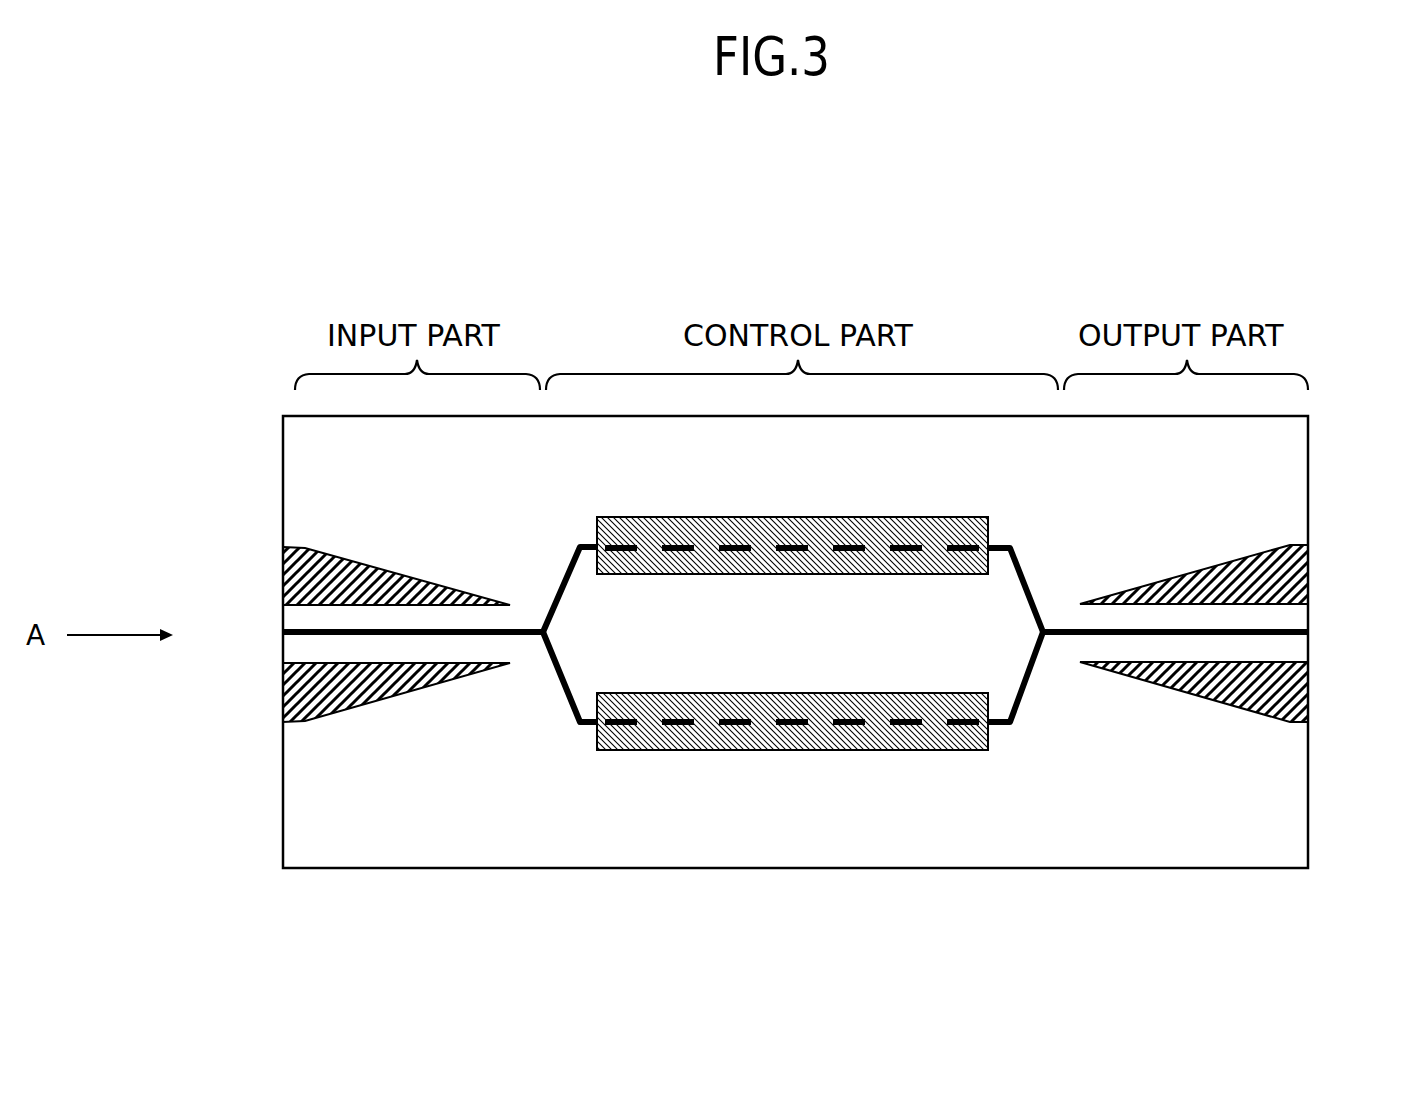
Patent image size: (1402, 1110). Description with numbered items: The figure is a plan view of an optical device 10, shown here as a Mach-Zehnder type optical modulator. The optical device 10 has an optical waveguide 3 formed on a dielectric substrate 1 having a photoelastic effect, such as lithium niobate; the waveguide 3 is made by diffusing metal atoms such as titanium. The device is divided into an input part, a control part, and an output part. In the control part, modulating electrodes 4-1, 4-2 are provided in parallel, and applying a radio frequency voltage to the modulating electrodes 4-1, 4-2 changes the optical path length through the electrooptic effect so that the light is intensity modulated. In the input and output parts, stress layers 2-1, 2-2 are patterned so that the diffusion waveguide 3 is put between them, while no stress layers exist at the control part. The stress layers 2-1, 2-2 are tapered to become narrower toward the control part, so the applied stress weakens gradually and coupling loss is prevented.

The optical device 10 is at (163, 218).
The dielectric substrate 1 is at (1296, 838).
The stress layer 2-1 is at (283, 583).
The stress layer 2-2 is at (283, 688).
The optical waveguide 3 is at (283, 630).
The modulating electrode 4-1 is at (922, 518).
The modulating electrode 4-2 is at (920, 750).